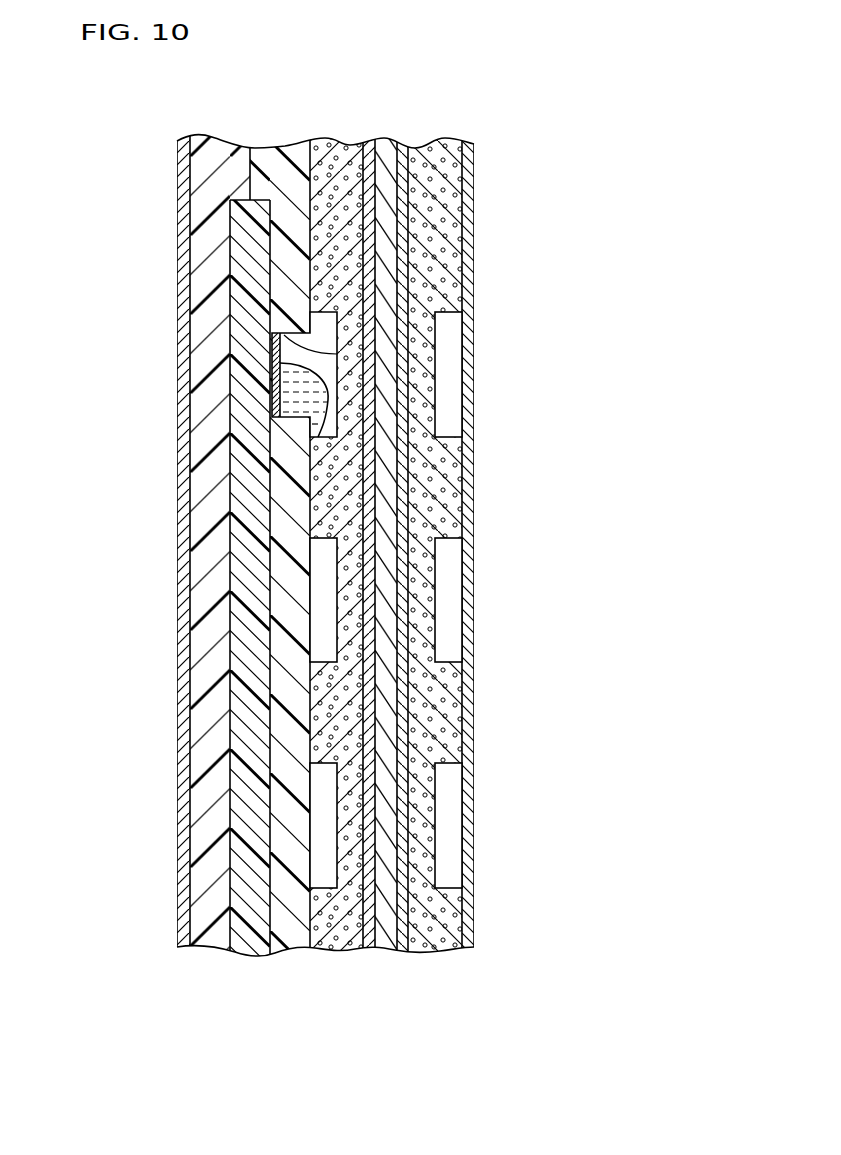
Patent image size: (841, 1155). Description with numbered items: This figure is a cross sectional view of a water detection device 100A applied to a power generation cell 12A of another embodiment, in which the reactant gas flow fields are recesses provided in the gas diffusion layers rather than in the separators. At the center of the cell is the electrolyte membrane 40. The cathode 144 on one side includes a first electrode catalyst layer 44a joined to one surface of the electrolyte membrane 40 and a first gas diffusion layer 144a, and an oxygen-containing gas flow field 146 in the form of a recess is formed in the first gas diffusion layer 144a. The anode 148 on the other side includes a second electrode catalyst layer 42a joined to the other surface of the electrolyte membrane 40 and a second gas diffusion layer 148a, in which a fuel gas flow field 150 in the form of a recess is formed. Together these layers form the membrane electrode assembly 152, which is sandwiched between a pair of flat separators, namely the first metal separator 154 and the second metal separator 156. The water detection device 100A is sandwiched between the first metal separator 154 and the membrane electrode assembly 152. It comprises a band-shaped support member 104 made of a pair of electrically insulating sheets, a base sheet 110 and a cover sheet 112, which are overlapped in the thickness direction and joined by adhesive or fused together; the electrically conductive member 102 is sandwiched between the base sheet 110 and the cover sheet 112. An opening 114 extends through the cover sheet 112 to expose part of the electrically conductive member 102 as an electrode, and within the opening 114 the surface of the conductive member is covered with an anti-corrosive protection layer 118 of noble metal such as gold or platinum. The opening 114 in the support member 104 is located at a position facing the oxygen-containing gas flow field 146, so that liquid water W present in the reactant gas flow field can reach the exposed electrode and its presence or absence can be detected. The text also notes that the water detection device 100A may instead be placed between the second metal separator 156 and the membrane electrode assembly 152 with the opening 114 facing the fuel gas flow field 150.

The water detection device 100A is at (242, 126).
The power generation cell 12A is at (469, 60).
The electrolyte membrane 40 is at (386, 152).
The cathode 144 is at (206, 545).
The first gas diffusion layer 144a is at (333, 182).
The first electrode catalyst layer 44a is at (370, 230).
The anode 148 is at (499, 545).
The second gas diffusion layer 148a is at (433, 169).
The second electrode catalyst layer 42a is at (405, 211).
The first metal separator 154 is at (184, 261).
The second metal separator 156 is at (466, 294).
The oxygen-containing gas flow field 146 is at (322, 323).
The fuel gas flow field 150 is at (445, 391).
The opening 114 is at (337, 354).
The protection layer 118 is at (276, 349).
The liquid water W is at (305, 399).
The electrically conductive member 102 is at (212, 579).
The base sheet 110 is at (210, 922).
The cover sheet 112 is at (287, 930).
The support member 104 is at (313, 1025).
The membrane electrode assembly 152 is at (386, 963).